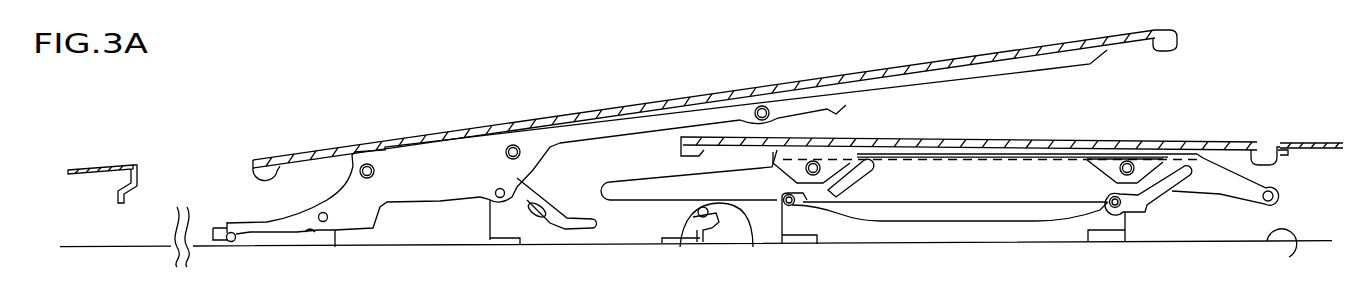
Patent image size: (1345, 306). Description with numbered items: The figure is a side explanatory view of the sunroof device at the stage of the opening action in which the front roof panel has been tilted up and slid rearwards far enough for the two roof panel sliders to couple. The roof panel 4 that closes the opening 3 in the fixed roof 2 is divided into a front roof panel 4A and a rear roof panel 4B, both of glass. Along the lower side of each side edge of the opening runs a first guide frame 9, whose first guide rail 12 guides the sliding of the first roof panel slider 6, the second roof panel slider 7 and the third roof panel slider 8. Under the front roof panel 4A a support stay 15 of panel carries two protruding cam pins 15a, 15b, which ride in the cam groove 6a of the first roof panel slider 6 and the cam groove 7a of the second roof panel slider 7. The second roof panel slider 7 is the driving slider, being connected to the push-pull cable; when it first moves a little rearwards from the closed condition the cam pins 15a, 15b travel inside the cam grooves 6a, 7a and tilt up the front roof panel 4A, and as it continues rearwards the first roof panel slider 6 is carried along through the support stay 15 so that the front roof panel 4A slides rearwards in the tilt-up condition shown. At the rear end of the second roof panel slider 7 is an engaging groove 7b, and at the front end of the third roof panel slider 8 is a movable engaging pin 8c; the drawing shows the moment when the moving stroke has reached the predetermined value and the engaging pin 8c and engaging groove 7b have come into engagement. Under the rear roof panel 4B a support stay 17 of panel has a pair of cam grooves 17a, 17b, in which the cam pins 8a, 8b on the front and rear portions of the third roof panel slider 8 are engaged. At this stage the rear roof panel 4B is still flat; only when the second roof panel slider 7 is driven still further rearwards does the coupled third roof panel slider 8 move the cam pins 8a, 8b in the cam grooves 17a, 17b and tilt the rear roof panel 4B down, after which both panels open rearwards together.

The fixed roof 2 is at (93, 165).
The opening 3 is at (138, 169).
The roof panel 4 is at (798, 105).
The front roof panel 4A is at (501, 118).
The rear roof panel 4B is at (1048, 137).
The first roof panel slider 6 is at (262, 238).
The cam groove 6a is at (322, 240).
The second roof panel slider 7 is at (582, 238).
The cam groove 7a is at (547, 217).
The engaging groove 7b is at (750, 240).
The third roof panel slider 8 is at (962, 233).
The cam pin 8a is at (790, 207).
The cam pin 8b is at (1115, 210).
The engaging pin 8c is at (697, 215).
The first guide frame 9 is at (1292, 265).
The first guide rail 12 is at (1298, 247).
The support stay of panel 15 is at (443, 177).
The cam pin 15a is at (330, 217).
The cam pin 15b is at (477, 203).
The support stay of panel 17 is at (1015, 180).
The cam groove 17a is at (822, 187).
The cam groove 17b is at (1168, 197).